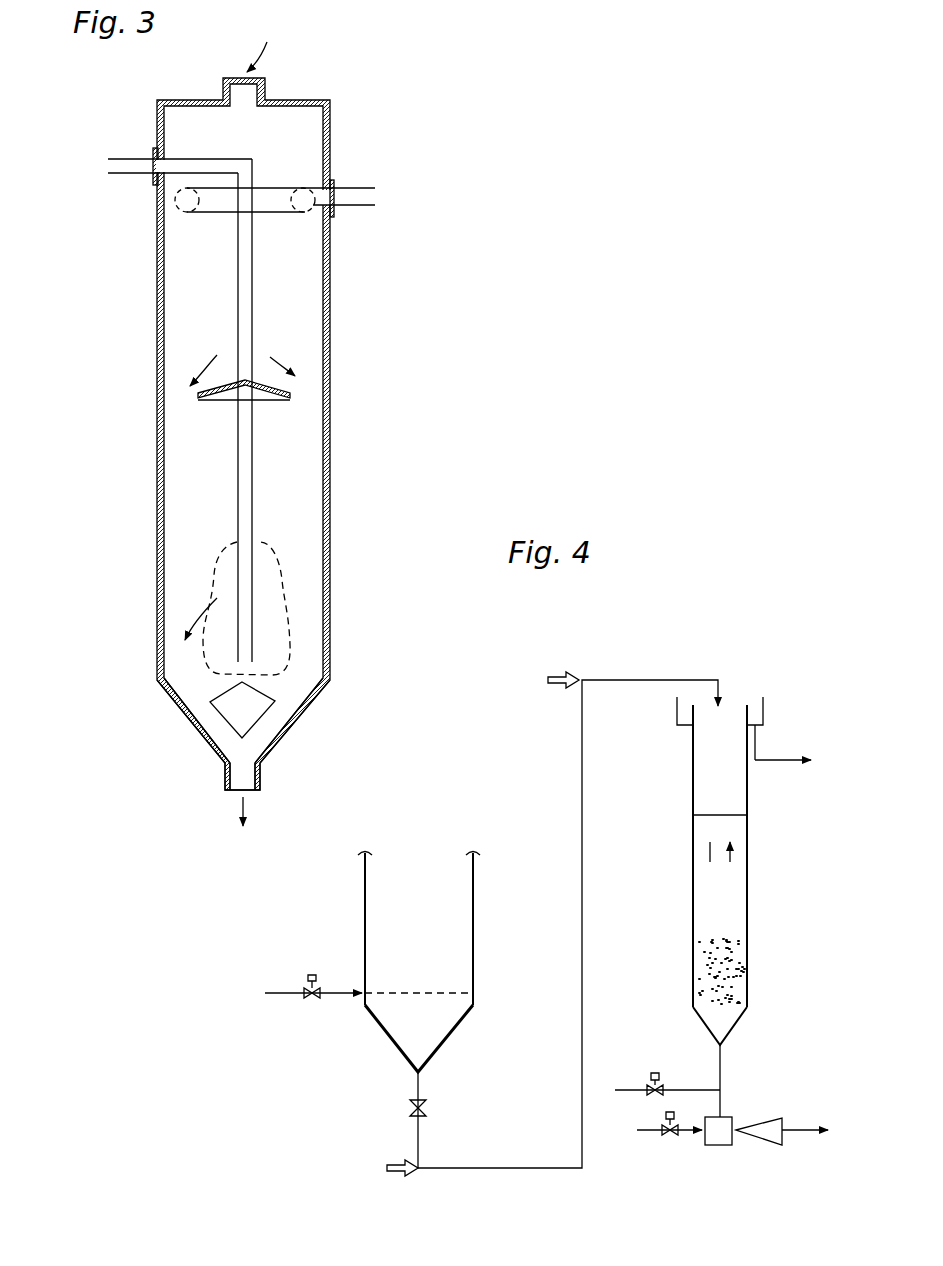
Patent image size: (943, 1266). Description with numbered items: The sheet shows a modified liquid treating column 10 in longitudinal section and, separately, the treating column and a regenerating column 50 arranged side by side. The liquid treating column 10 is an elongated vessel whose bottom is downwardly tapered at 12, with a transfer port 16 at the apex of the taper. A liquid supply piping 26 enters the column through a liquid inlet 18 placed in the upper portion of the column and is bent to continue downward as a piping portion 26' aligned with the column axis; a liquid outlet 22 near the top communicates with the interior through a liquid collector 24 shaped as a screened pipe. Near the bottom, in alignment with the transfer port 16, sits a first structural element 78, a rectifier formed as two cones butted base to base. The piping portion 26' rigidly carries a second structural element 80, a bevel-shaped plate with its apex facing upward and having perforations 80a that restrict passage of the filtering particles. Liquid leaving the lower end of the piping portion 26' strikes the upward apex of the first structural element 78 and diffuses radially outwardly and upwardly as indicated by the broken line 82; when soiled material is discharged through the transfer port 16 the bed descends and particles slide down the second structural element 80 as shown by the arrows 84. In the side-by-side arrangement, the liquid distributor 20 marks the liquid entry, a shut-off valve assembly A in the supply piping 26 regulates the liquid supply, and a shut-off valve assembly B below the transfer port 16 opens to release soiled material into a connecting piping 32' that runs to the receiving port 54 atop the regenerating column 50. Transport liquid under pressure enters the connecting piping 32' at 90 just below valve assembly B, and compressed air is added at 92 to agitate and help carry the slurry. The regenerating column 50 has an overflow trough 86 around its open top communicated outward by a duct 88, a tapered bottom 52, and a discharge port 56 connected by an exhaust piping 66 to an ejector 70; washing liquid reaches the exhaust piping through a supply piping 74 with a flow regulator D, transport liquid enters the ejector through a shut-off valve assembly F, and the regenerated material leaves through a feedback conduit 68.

In FIG. 3, the liquid treating column 10 is at (155, 390).
In FIG. 4, the liquid treating column 10 is at (360, 887).
In FIG. 3, the downwardly tapered area 12 is at (180, 713).
In FIG. 4, the downwardly tapered area 12 is at (447, 1040).
In FIG. 3, the transfer port 16 is at (247, 792).
In FIG. 4, the transfer port 16 is at (413, 1075).
In FIG. 3, the liquid inlet 18 is at (153, 150).
In FIG. 4, the liquid distributor 20 is at (433, 993).
In FIG. 3, the liquid outlet 22 is at (298, 176).
In FIG. 3, the liquid collector 24 is at (302, 196).
In FIG. 3, the liquid supply piping 26 is at (162, 195).
In FIG. 4, the liquid supply piping 26 is at (309, 1028).
In FIG. 3, the piping portion 26' is at (162, 410).
In FIG. 4, the connecting piping 32' is at (568, 924).
In FIG. 4, the regenerating column 50 is at (754, 900).
In FIG. 4, the downwardly tapered area 52 is at (738, 1022).
In FIG. 4, the receiving port 54 is at (733, 700).
In FIG. 4, the discharge port 56 is at (718, 1043).
In FIG. 4, the exhaust piping 66 is at (722, 1098).
In FIG. 4, the feedback conduit 68 is at (800, 1134).
In FIG. 4, the ejector 70 is at (715, 1147).
In FIG. 4, the supply piping 74 is at (680, 1090).
In FIG. 3, the first structural element 78 is at (248, 710).
In FIG. 3, the second structural element 80 is at (262, 401).
In FIG. 3, the perforations 80a is at (276, 391).
In FIG. 3, the broken line 82 is at (278, 573).
In FIG. 3, the arrows 84 is at (198, 372).
In FIG. 4, the overflow trough 86 is at (757, 708).
In FIG. 4, the duct 88 is at (775, 762).
In FIG. 4, the transport liquid supply point 90 is at (397, 1176).
In FIG. 4, the compressed air junction 92 is at (560, 675).
In FIG. 4, the shut-off valve assembly A is at (303, 986).
In FIG. 4, the shut-off valve assembly B is at (410, 1112).
In FIG. 4, the flow regulator D is at (652, 1078).
In FIG. 4, the shut-off valve assembly F is at (670, 1140).